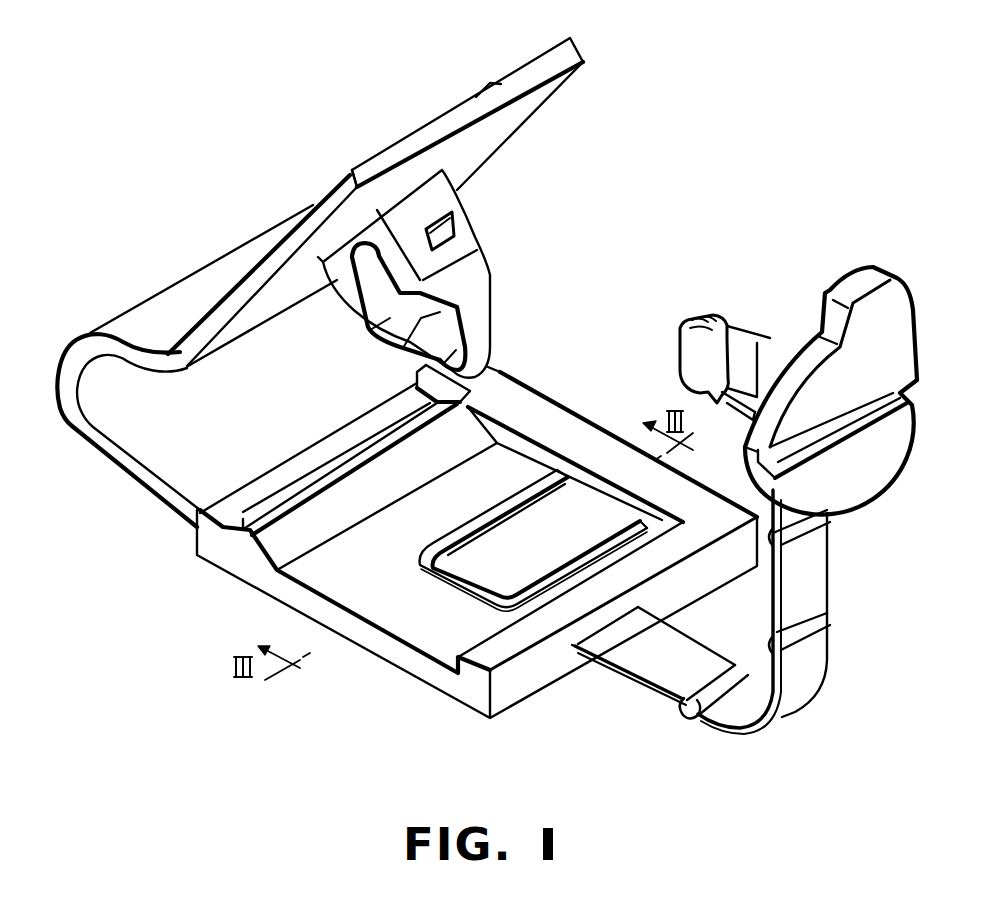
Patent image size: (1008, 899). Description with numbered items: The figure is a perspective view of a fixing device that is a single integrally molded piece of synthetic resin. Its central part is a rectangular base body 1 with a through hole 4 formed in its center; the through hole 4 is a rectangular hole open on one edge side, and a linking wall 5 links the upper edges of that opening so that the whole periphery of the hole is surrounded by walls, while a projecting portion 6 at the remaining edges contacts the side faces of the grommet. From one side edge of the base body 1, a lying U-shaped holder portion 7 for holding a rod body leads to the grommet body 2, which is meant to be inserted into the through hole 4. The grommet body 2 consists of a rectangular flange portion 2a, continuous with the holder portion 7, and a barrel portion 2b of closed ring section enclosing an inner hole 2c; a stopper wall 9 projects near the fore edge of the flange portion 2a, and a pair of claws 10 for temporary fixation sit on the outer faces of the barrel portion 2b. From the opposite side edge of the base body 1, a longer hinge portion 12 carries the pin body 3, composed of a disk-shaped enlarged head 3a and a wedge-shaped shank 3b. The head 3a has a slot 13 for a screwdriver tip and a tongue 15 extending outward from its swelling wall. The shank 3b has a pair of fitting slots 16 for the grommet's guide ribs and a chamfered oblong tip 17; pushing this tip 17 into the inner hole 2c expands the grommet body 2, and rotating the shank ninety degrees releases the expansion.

The base body 1 is at (388, 607).
The grommet body 2 is at (415, 110).
The flange portion 2a is at (362, 165).
The barrel portion 2b is at (462, 247).
The inner hole 2c is at (415, 318).
The pin body 3 is at (800, 292).
The enlarged head 3a is at (870, 450).
The shank 3b is at (737, 340).
The through hole 4 is at (503, 567).
The linking wall 5 is at (583, 432).
The projecting portion 6 is at (465, 547).
The holder portion 7 is at (80, 435).
The stopper wall 9 is at (540, 68).
The claws 10 is at (456, 226).
The hinge portion 12 is at (807, 666).
The slot 13 is at (817, 447).
The tongue 15 is at (892, 300).
The fitting slots 16 is at (684, 442).
The oblong tip 17 is at (690, 355).